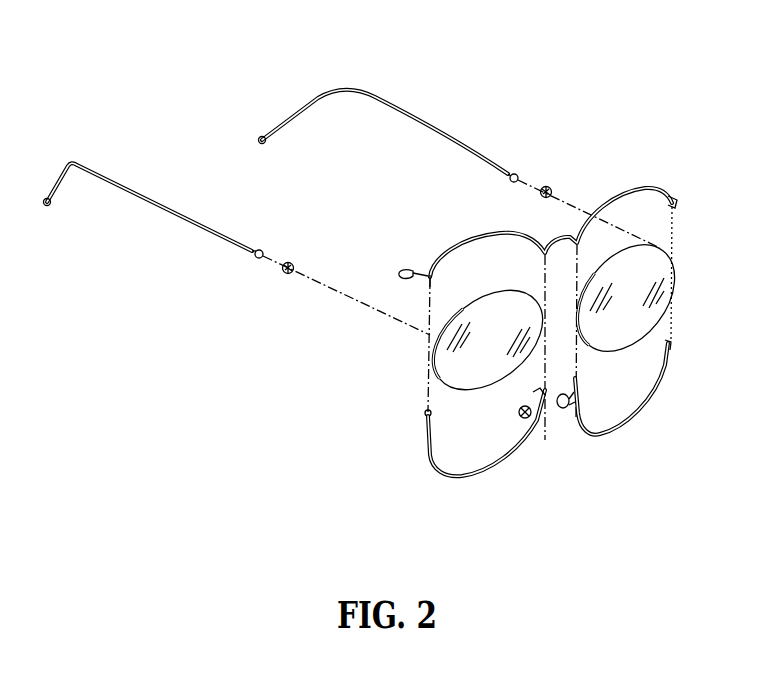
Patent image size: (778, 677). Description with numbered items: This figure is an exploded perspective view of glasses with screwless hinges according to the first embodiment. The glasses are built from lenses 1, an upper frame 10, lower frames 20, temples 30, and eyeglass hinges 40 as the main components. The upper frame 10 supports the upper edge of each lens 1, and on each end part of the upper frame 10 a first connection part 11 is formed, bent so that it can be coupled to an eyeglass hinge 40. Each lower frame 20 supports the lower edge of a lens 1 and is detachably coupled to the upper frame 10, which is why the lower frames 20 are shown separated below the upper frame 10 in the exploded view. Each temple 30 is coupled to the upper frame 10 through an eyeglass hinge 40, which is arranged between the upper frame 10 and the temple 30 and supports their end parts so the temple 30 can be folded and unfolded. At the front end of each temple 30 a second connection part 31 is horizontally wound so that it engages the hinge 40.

The lens 1 is at (660, 267).
The upper frame 10 is at (631, 190).
The first connection part 11 is at (400, 268).
The lower frame 20 is at (496, 492).
The temple 30 is at (129, 180).
The second connection part 31 is at (255, 257).
The eyeglass hinge 40 is at (284, 280).